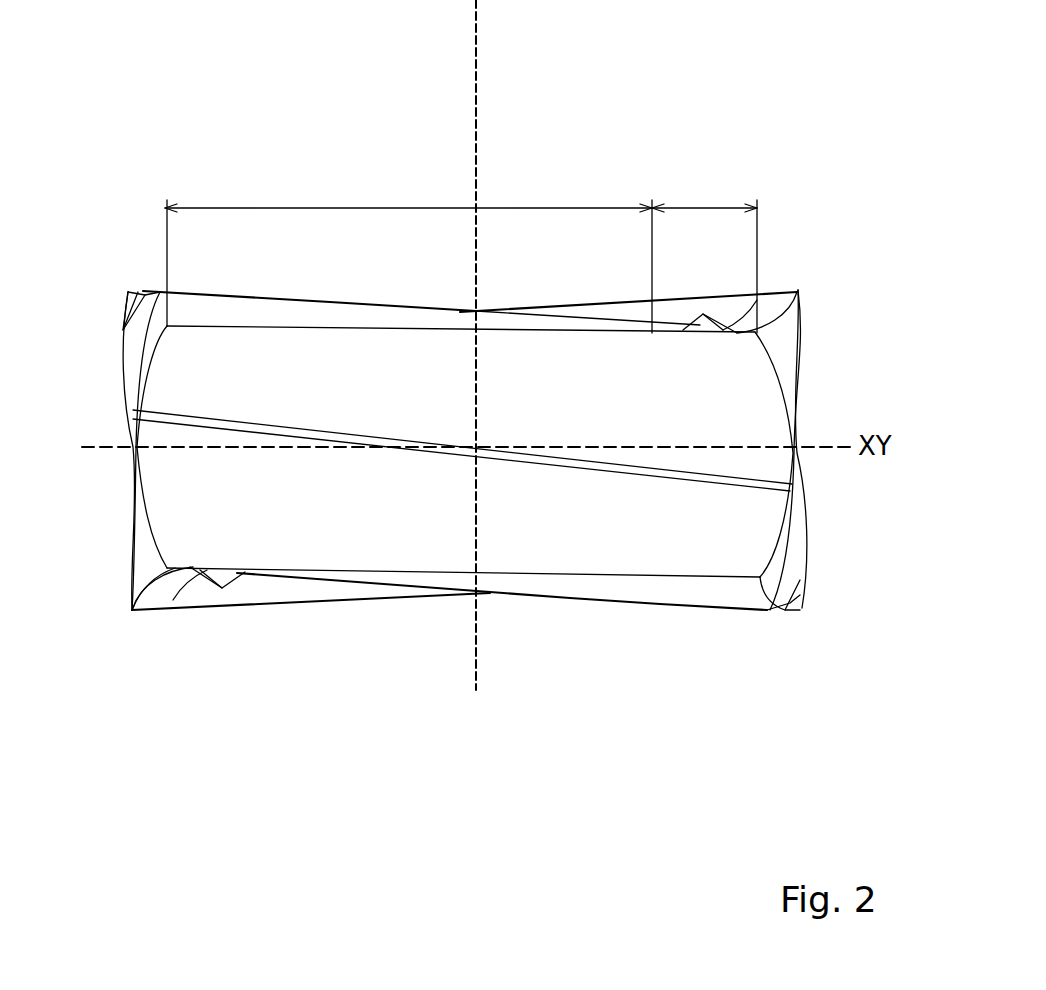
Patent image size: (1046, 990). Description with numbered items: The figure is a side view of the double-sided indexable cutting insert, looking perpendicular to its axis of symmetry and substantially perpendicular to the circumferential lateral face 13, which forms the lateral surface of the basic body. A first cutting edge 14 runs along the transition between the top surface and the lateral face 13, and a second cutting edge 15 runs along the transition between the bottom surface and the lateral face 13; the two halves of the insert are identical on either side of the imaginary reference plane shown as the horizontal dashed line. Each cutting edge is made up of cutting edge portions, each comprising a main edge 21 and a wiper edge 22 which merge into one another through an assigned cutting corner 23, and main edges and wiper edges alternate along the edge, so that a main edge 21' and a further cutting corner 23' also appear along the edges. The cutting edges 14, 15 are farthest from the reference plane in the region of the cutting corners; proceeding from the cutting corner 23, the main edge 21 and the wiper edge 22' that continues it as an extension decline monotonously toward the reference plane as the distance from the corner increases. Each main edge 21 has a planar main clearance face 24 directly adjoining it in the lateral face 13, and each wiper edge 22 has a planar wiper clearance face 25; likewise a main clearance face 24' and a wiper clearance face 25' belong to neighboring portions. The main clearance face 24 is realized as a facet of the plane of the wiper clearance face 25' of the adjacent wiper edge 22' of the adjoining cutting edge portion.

The circumferential lateral face 13 is at (718, 430).
The first cutting edge 14 is at (513, 310).
The second cutting edge 15 is at (513, 597).
The main edge 21 is at (508, 196).
The main edge 21' is at (615, 702).
The wiper edge 22 is at (311, 686).
The wiper edge 22' is at (708, 204).
The cutting corner 23 is at (145, 442).
The cutting corner 23' is at (793, 446).
The main clearance face 24 is at (236, 190).
The main clearance face 24' is at (713, 702).
The wiper clearance face 25 is at (461, 609).
The wiper clearance face 25' is at (462, 297).